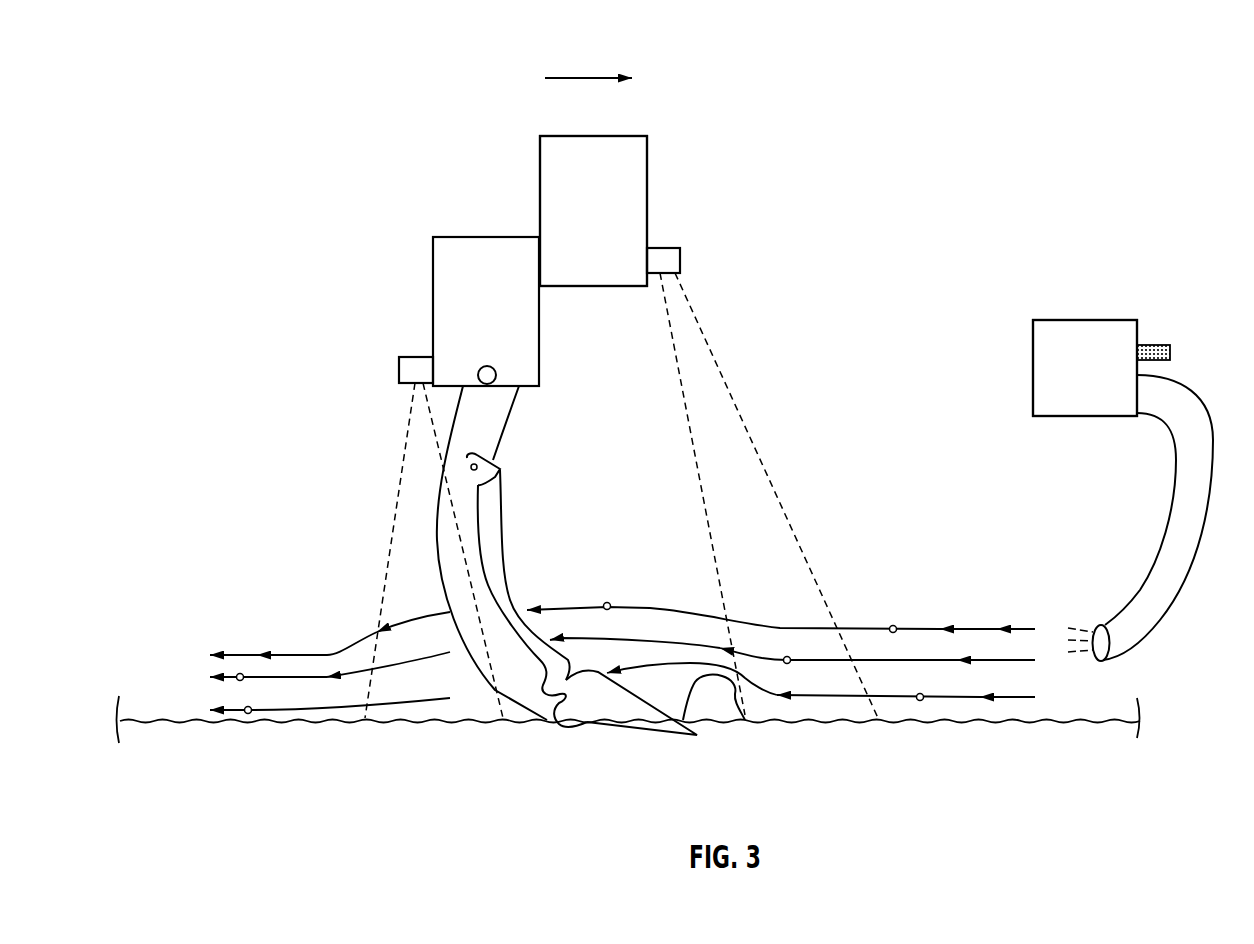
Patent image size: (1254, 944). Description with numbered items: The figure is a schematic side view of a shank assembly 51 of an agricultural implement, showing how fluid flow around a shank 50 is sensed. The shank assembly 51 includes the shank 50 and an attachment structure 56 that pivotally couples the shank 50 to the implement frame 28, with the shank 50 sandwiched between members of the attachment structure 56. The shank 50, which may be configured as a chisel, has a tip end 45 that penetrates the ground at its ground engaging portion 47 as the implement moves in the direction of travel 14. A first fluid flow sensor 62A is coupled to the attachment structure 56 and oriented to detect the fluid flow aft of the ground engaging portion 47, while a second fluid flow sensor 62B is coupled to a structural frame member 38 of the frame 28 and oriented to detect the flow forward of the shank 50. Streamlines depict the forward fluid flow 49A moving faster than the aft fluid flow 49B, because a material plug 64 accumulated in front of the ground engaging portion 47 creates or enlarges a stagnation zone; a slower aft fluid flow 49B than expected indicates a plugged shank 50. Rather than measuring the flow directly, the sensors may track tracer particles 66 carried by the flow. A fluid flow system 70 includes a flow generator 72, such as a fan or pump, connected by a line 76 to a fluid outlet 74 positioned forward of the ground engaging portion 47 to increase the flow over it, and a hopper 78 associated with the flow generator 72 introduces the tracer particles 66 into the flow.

The direction of travel 14 is at (585, 78).
The frame 28 is at (515, 137).
The structural frame member 38 is at (607, 234).
The tip end 45 is at (692, 740).
The ground engaging portion 47 is at (622, 750).
The forward fluid flow 49A is at (888, 558).
The aft fluid flow 49B is at (282, 612).
The shank 50 is at (493, 439).
The shank assembly 51 is at (312, 163).
The attachment structure 56 is at (501, 332).
The first fluid flow sensor 62A is at (430, 357).
The second fluid flow sensor 62B is at (653, 248).
The material plug 64 is at (722, 707).
The tracer particles 66 is at (610, 603).
The fluid flow system 70 is at (1058, 290).
The flow generator 72 is at (1097, 387).
The fluid outlet 74 is at (1090, 612).
The line 76 is at (1185, 468).
The hopper 78 is at (1145, 337).